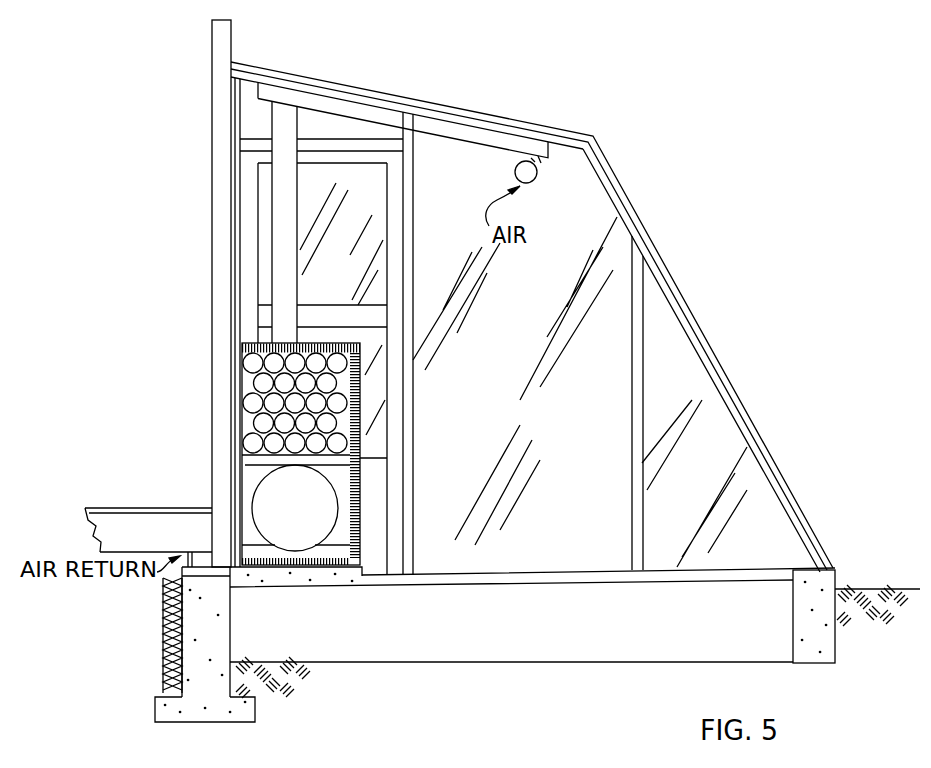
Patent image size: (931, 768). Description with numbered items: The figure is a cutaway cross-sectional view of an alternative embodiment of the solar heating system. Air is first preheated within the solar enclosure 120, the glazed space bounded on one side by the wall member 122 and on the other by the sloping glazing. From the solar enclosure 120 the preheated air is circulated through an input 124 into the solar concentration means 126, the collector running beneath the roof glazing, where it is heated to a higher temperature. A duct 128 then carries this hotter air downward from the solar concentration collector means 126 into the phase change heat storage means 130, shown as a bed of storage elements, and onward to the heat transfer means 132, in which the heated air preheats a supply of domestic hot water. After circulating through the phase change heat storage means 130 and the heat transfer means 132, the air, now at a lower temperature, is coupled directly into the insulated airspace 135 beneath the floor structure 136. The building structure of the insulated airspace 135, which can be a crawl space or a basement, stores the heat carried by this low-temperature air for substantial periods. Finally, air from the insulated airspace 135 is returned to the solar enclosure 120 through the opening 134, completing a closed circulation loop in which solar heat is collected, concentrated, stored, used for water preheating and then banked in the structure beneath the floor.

The solar enclosure 120 is at (615, 150).
The wall column 122 is at (212, 288).
The input 124 is at (531, 182).
The solar concentration means 126 is at (452, 133).
The duct 128 is at (288, 123).
The phase change heat storage means 130 is at (343, 385).
The heat transfer means 132 is at (323, 511).
The opening 134 is at (203, 552).
The insulated airspace 135 is at (104, 667).
The floor structure 136 is at (148, 507).